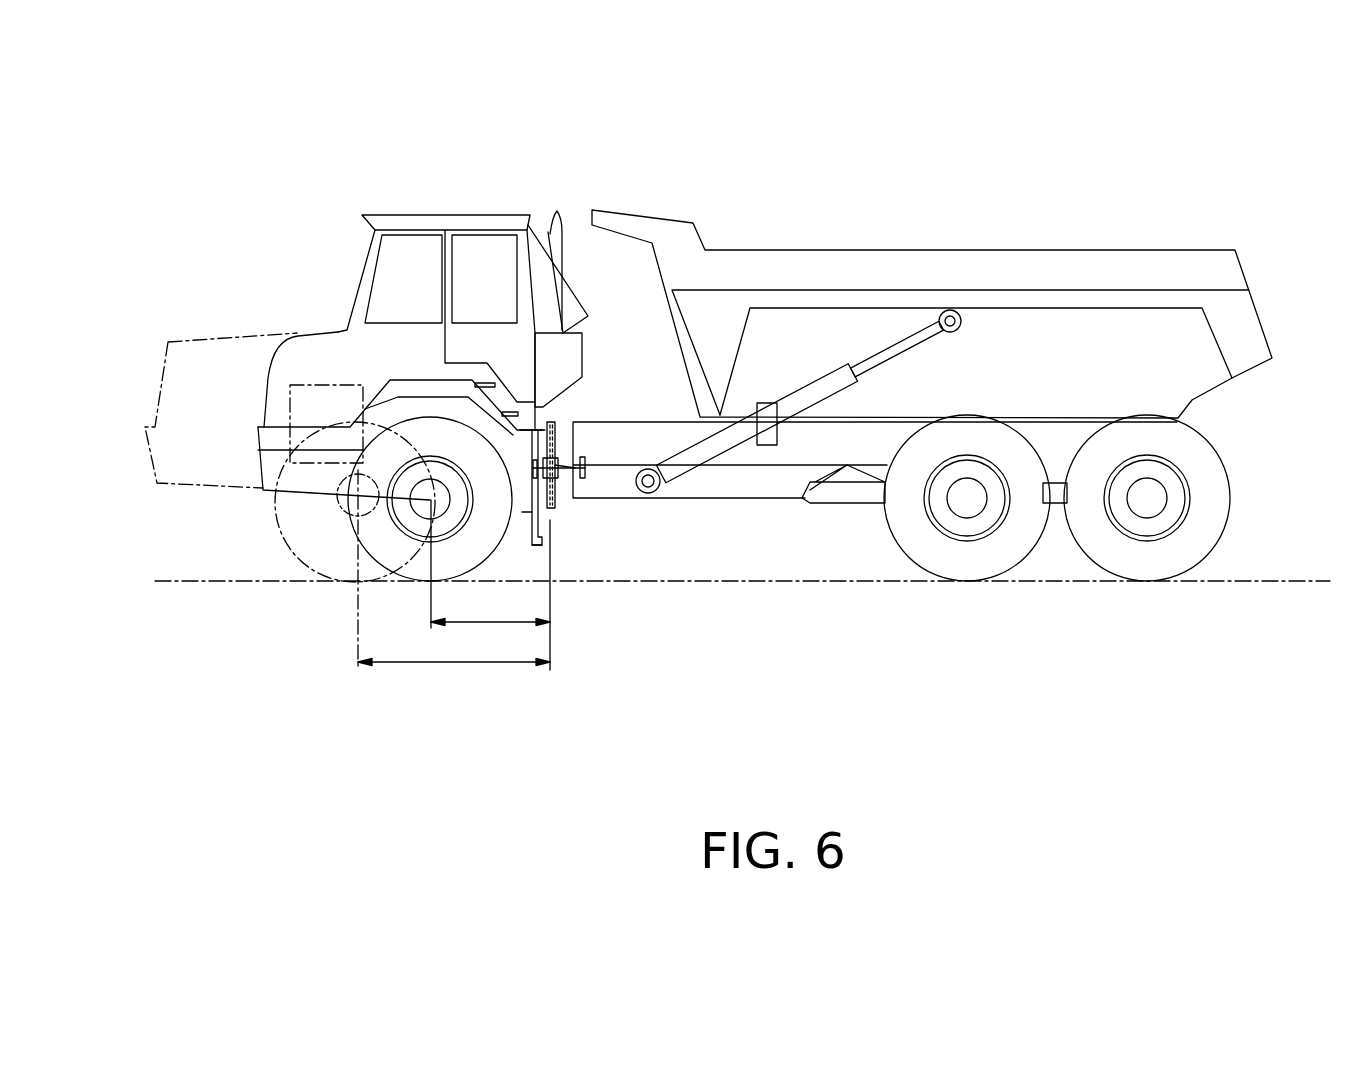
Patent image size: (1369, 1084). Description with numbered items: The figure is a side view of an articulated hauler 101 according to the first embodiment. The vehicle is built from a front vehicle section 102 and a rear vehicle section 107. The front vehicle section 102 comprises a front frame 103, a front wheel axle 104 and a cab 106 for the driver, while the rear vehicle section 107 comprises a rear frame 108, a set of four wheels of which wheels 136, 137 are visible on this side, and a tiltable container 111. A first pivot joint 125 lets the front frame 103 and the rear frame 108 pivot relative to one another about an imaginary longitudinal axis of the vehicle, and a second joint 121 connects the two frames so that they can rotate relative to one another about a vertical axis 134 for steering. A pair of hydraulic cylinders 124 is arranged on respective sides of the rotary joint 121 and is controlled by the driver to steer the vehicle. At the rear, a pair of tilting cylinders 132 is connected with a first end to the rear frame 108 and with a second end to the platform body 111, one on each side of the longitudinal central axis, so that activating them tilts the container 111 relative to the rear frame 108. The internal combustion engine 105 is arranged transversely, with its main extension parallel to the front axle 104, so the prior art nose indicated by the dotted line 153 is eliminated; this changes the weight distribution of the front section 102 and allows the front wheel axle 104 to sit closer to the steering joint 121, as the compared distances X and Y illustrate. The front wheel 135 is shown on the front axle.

The articulated hauler 101 is at (846, 185).
The front vehicle section 102 is at (458, 176).
The front frame 103 is at (522, 515).
The front wheel axle 104 is at (347, 495).
The internal combustion engine 105 is at (322, 413).
The cab 106 is at (500, 222).
The rear vehicle section 107 is at (1051, 219).
The rear frame 108 is at (722, 487).
The tiltable container 111 is at (1230, 322).
The second joint 121 is at (560, 552).
The hydraulic cylinders 124 is at (558, 462).
The first pivot joint 125 is at (576, 510).
The tilting cylinders 132 is at (720, 442).
The vertical axis 134 is at (553, 420).
The front wheel 135 is at (375, 537).
The wheel 136 is at (1023, 543).
The wheel 137 is at (1198, 542).
The dotted line 153 is at (162, 385).